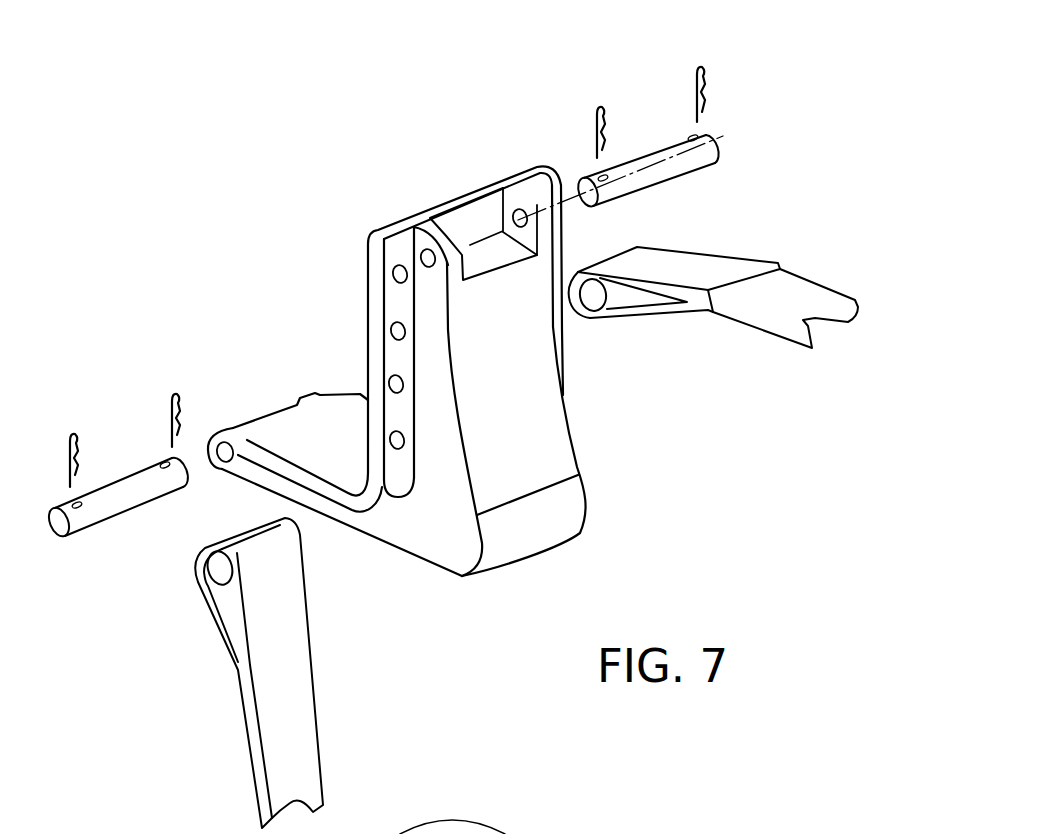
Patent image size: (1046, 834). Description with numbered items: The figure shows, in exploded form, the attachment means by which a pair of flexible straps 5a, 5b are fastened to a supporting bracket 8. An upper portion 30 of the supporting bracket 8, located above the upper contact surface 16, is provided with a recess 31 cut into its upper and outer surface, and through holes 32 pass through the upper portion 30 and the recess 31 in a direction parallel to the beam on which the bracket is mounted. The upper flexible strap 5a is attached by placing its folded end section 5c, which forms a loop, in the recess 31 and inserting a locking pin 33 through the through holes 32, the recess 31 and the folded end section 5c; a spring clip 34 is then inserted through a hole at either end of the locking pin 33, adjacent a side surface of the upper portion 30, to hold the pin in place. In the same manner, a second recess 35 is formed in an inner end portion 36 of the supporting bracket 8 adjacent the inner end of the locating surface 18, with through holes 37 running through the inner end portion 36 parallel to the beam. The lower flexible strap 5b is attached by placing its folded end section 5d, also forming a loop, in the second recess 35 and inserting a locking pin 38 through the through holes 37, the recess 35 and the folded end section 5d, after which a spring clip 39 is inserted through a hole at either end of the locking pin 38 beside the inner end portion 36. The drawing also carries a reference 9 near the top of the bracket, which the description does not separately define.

The supporting bracket 8 is at (617, 533).
The top plate 9 is at (413, 217).
The upper contact surface 16 is at (535, 343).
The locating surface 18 is at (386, 562).
The upper portion 30 is at (523, 175).
The recess 31 is at (478, 213).
The through holes 32 is at (414, 244).
The locking pin 33 is at (667, 172).
The spring clip 34 is at (602, 107).
The second recess 35 is at (271, 399).
The inner end portion 36 is at (307, 393).
The through holes 37 is at (223, 464).
The locking pin 38 is at (165, 492).
The spring clip 39 is at (70, 433).
The upper flexible strap 5a is at (783, 302).
The lower flexible strap 5b is at (250, 803).
The folded end section 5c is at (667, 256).
The folded end section 5d is at (217, 617).